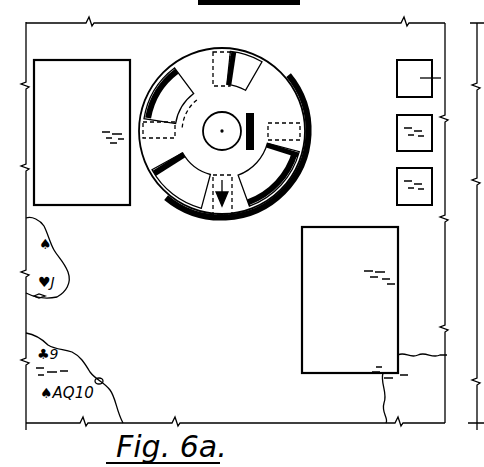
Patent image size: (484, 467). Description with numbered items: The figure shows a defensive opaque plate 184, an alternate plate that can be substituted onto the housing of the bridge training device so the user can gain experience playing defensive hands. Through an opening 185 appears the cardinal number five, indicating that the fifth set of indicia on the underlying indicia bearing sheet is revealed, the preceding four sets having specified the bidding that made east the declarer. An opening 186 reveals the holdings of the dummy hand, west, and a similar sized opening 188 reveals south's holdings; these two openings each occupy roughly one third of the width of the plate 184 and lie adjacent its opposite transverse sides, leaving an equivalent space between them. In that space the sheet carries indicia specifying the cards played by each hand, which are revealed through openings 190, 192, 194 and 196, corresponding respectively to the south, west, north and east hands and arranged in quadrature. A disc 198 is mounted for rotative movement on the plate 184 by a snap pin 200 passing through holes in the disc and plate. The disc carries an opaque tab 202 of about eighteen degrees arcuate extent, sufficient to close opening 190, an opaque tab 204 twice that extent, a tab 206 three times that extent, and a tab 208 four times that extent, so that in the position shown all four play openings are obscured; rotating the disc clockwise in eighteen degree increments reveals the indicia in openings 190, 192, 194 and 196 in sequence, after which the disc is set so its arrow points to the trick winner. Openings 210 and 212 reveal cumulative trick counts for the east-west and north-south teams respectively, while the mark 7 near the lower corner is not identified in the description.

The region boundary 7 is at (443, 392).
The defensive opaque plate 184 is at (134, 299).
The opening 185 is at (397, 81).
The opening 186 is at (85, 205).
The opening 188 is at (355, 381).
The opening 190 is at (217, 216).
The opening 192 is at (188, 92).
The opening 194 is at (228, 47).
The opening 196 is at (306, 146).
The disc 198 is at (219, 164).
The snap pin 200 is at (233, 118).
The opaque tab 202 is at (238, 216).
The opaque tab 204 is at (158, 168).
The tab 206 is at (186, 56).
The tab 208 is at (293, 82).
The opening 210 is at (398, 126).
The opening 212 is at (398, 191).